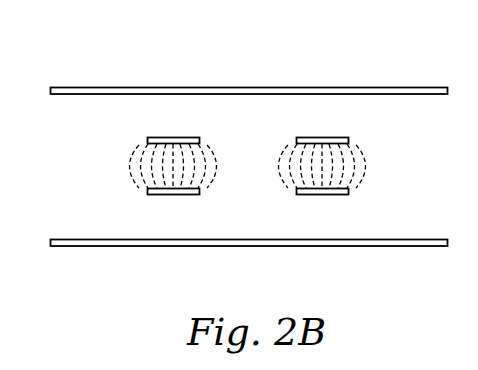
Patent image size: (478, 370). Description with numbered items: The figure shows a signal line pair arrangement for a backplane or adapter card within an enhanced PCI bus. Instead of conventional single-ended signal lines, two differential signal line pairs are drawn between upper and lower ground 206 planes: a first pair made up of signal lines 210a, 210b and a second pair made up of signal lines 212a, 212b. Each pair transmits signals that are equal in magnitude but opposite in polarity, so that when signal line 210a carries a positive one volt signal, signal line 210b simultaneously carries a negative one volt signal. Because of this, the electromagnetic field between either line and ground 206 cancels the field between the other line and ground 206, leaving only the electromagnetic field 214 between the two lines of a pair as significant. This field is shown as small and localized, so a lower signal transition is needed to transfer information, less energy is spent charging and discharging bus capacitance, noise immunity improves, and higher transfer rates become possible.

The ground 206 is at (408, 87).
The signal line 210a is at (173, 137).
The signal line 210b is at (173, 195).
The signal line 212a is at (322, 137).
The signal line 212b is at (322, 195).
The electromagnetic field 214 is at (276, 146).